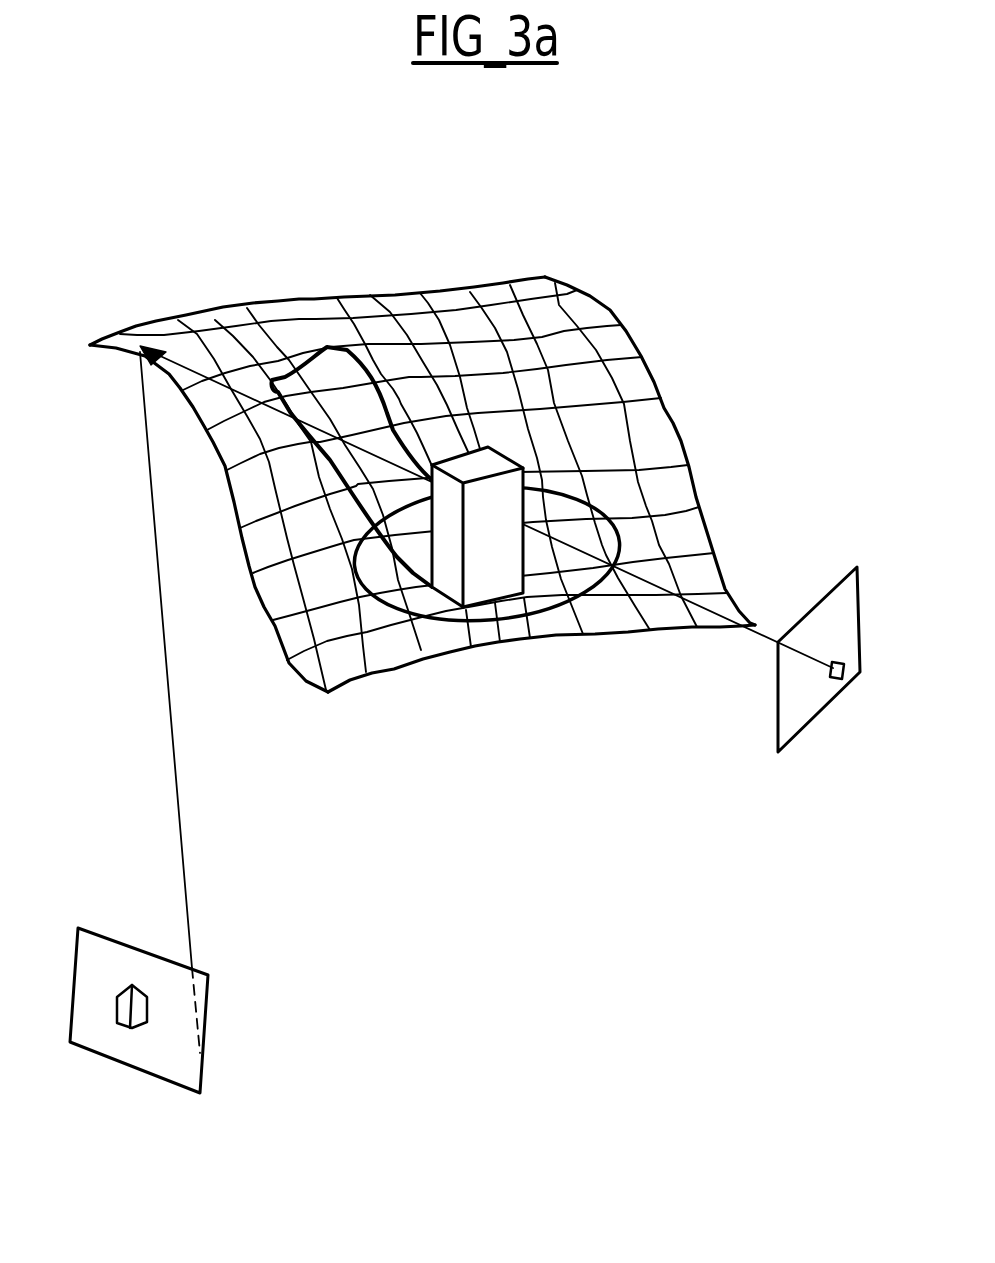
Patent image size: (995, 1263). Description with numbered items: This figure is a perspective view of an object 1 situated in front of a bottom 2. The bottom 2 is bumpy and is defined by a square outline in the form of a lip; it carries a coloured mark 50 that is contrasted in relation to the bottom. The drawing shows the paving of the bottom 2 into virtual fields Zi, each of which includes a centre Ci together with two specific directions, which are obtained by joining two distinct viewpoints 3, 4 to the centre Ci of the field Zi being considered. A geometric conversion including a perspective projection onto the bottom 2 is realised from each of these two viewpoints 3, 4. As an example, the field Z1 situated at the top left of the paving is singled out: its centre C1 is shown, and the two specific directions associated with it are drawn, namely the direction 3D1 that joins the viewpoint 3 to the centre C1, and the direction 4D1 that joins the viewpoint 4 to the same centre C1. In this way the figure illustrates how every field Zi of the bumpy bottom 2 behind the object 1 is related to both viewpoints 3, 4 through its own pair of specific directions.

The object 1 is at (487, 583).
The bottom 2 is at (548, 290).
The viewpoint 3 is at (768, 647).
The viewpoint 4 is at (192, 930).
The coloured mark 50 is at (553, 583).
The virtual field Z1 is at (120, 340).
The virtual field Zi is at (610, 435).
The centre C1 is at (148, 338).
The centre Ci is at (600, 445).
The specific direction 3D1 is at (260, 397).
The specific direction 4D1 is at (180, 780).